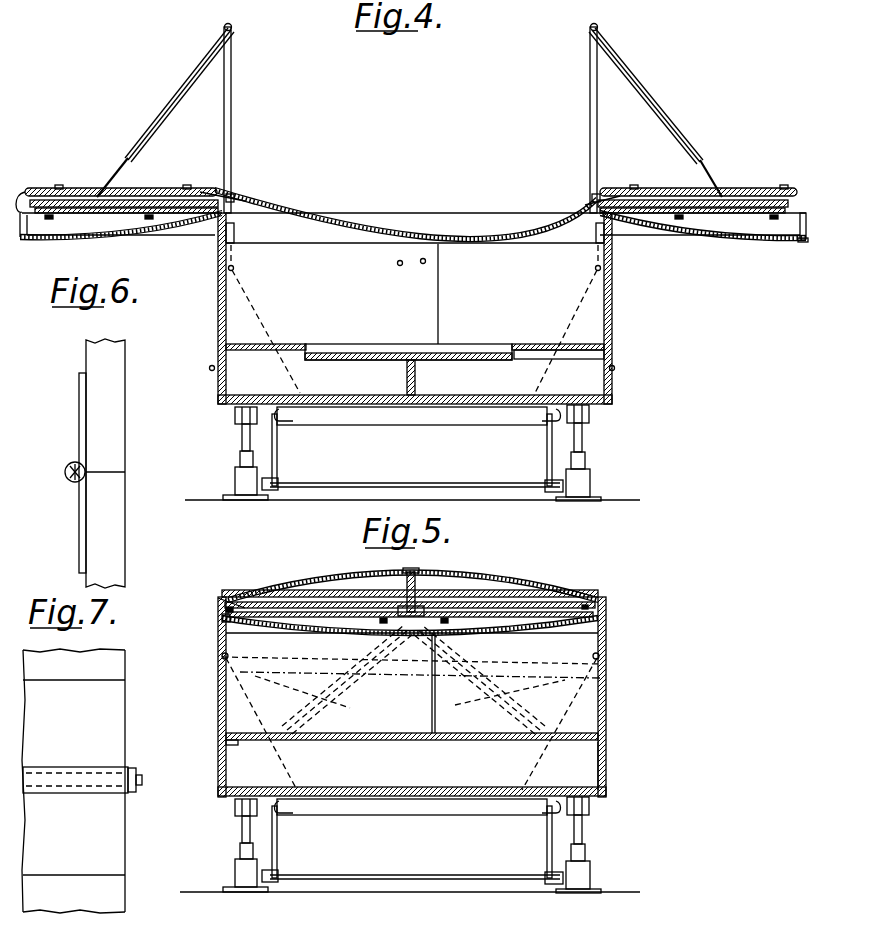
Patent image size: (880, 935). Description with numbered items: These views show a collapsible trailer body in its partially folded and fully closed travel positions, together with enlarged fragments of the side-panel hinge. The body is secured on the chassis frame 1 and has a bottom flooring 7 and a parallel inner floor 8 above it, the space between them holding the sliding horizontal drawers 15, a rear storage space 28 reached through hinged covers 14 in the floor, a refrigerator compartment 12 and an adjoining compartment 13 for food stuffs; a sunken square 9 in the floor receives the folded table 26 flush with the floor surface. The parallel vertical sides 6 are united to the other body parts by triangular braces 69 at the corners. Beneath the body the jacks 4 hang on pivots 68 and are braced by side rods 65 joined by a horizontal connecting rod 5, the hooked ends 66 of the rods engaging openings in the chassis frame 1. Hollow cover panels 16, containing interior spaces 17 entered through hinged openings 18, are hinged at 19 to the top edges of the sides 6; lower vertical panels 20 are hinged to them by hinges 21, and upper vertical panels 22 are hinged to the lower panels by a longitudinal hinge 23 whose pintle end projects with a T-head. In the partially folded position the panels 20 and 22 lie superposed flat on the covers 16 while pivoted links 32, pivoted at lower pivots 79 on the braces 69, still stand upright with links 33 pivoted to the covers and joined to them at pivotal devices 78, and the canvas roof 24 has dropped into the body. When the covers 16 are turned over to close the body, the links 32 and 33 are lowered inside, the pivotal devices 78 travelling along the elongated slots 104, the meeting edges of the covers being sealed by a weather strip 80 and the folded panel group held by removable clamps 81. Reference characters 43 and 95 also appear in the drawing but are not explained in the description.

In FIG. 4, the chassis frame 1 is at (368, 410).
In FIG. 5, the chassis frame 1 is at (444, 804).
In FIG. 4, the jacks 4 is at (240, 458).
In FIG. 5, the jacks 4 is at (240, 848).
In FIG. 4, the horizontal connecting rod 5 is at (390, 483).
In FIG. 5, the horizontal connecting rod 5 is at (400, 875).
In FIG. 4, the vertical sides 6 is at (218, 300).
In FIG. 4, the bottom flooring 7 is at (468, 405).
In FIG. 5, the bottom flooring 7 is at (395, 798).
In FIG. 4, the inner floor 8 is at (550, 344).
In FIG. 5, the inner floor 8 is at (240, 738).
In FIG. 4, the sunken square 9 is at (472, 350).
In FIG. 5, the compartment 12 is at (226, 636).
In FIG. 5, the compartment 13 is at (598, 636).
In FIG. 5, the hinged covers 14 is at (332, 740).
In FIG. 4, the horizontal drawers 15 is at (235, 377).
In FIG. 4, the cover panels 16 is at (118, 234).
In FIG. 5, the cover panels 16 is at (282, 582).
In FIG. 4, the interior spaces 17 is at (103, 227).
In FIG. 4, the hinged openings 18 is at (228, 23).
In FIG. 4, the hinge 19 is at (246, 203).
In FIG. 5, the hinge 19 is at (218, 598).
In FIG. 4, the lower vertical panels 20 is at (172, 208).
In FIG. 6, the lower vertical panels 20 is at (115, 537).
In FIG. 7, the lower vertical panels 20 is at (74, 892).
In FIG. 5, the lower vertical panels 20 is at (306, 600).
In FIG. 4, the hinges 21 is at (22, 192).
In FIG. 4, the upper vertical panels 22 is at (138, 190).
In FIG. 6, the upper vertical panels 22 is at (110, 428).
In FIG. 7, the upper vertical panels 22 is at (74, 670).
In FIG. 5, the upper vertical panels 22 is at (333, 610).
In FIG. 4, the longitudinal hinge 23 is at (236, 198).
In FIG. 6, the longitudinal hinge 23 is at (67, 479).
In FIG. 7, the longitudinal hinge 23 is at (112, 765).
In FIG. 5, the longitudinal hinge 23 is at (222, 618).
In FIG. 4, the canvas roof 24 is at (488, 228).
In FIG. 5, the canvas roof 24 is at (262, 622).
In FIG. 4, the table 26 is at (458, 343).
In FIG. 5, the storage space 28 is at (594, 752).
In FIG. 4, the pivoted links 32 is at (231, 110).
In FIG. 5, the pivoted links 32 is at (286, 660).
In FIG. 4, the links 33 is at (118, 165).
In FIG. 5, the links 33 is at (338, 706).
In FIG. 4, the pins 43 is at (421, 264).
In FIG. 4, the side rods 65 is at (278, 455).
In FIG. 5, the side rods 65 is at (278, 834).
In FIG. 4, the hooked ends 66 is at (285, 408).
In FIG. 5, the hooked ends 66 is at (285, 800).
In FIG. 4, the pivots 68 is at (235, 417).
In FIG. 5, the pivots 68 is at (235, 808).
In FIG. 4, the triangular braces 69 is at (262, 312).
In FIG. 5, the triangular braces 69 is at (228, 688).
In FIG. 5, the pivotal devices 78 is at (420, 683).
In FIG. 4, the lower pivots 79 is at (235, 268).
In FIG. 5, the lower pivots 79 is at (220, 657).
In FIG. 4, the weather strip 80 is at (803, 243).
In FIG. 5, the weather strip 80 is at (416, 574).
In FIG. 4, the removable clamps 81 is at (60, 185).
In FIG. 5, the removable clamps 81 is at (444, 625).
In FIG. 4, the bracket 95 is at (234, 233).
In FIG. 4, the elongated slots 104 is at (180, 90).
In FIG. 5, the elongated slots 104 is at (308, 714).